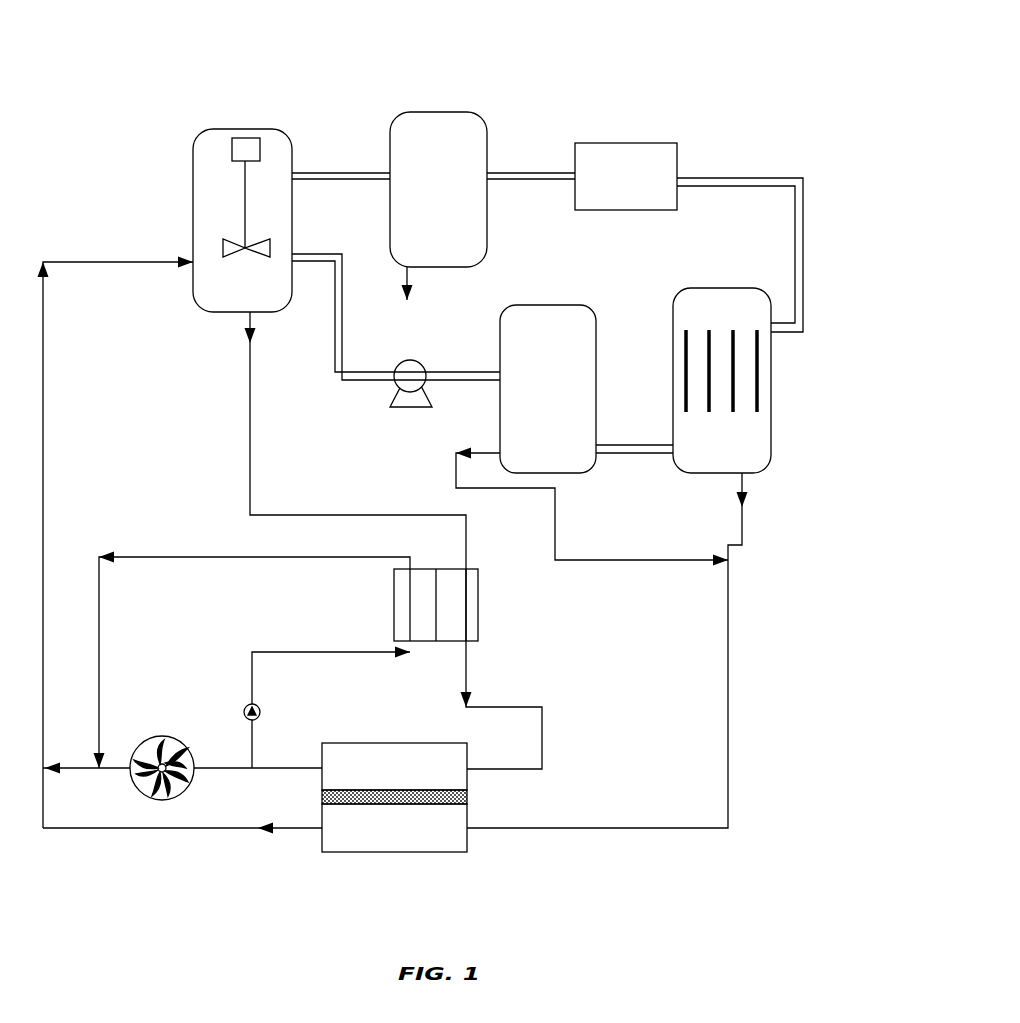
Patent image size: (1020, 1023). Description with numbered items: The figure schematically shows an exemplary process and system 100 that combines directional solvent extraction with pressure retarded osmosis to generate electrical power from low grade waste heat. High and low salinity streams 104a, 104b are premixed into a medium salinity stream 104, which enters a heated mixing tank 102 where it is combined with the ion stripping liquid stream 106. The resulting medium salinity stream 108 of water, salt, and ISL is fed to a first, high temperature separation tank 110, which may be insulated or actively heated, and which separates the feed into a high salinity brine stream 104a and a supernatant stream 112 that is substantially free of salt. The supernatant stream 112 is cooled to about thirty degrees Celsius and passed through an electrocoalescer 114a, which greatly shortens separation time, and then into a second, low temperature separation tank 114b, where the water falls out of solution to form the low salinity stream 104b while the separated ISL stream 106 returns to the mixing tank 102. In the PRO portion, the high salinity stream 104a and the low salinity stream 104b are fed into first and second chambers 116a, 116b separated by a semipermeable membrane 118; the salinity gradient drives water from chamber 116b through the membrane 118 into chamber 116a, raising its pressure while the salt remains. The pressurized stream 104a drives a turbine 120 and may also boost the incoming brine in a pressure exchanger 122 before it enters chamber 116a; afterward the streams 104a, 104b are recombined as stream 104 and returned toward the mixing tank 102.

The process and system 100 is at (832, 108).
The mixing tank 102 is at (292, 150).
The medium salinity stream 104 is at (43, 455).
The high salinity stream 104a is at (406, 272).
The low salinity stream 104b is at (515, 488).
The ion stripping liquid stream 106 is at (332, 356).
The medium salinity stream including water, salt, and ISL 108 is at (360, 170).
The first separation tank 110 is at (464, 112).
The supernatant stream 112 is at (538, 172).
The electrocoalescer 114a is at (771, 352).
The second separation tank 114b is at (636, 342).
The first chamber 116a is at (394, 766).
The second chamber 116b is at (394, 828).
The semipermeable membrane 118 is at (322, 797).
The turbine 120 is at (138, 796).
The pressure exchanger 122 is at (430, 642).